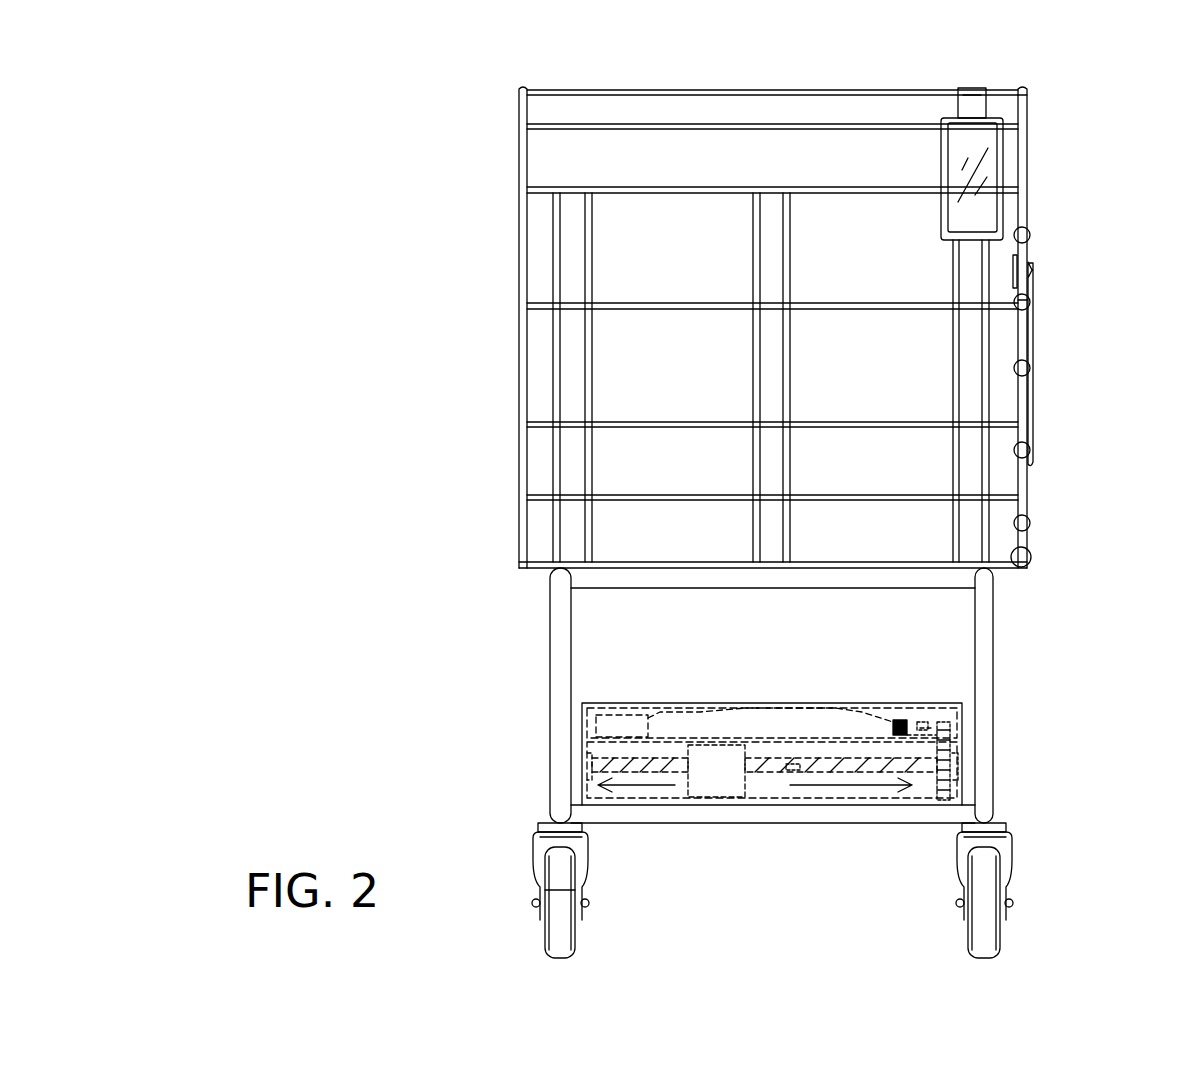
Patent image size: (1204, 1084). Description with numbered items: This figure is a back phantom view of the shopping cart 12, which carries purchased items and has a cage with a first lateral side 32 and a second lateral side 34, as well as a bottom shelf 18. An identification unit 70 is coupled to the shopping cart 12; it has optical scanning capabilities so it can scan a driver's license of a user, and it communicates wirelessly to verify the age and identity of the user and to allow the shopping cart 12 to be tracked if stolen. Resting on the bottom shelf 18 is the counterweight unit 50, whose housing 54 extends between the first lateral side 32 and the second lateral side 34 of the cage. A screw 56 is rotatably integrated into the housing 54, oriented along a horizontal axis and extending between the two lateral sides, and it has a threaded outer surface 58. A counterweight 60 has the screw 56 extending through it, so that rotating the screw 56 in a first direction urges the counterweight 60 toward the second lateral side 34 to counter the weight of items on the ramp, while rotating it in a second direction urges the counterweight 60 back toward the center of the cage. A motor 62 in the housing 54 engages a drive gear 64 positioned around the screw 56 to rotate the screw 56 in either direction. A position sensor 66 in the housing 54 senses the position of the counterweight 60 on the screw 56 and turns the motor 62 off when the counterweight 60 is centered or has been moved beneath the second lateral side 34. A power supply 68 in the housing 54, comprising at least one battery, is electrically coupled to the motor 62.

The shopping cart 12 is at (1080, 121).
The bottom shelf 18 is at (617, 805).
The first lateral side 32 is at (1025, 185).
The second lateral side 34 is at (520, 270).
The counterweight unit 50 is at (630, 697).
The housing 54 is at (945, 703).
The screw 56 is at (852, 770).
The outer surface 58 is at (790, 768).
The counterweight 60 is at (725, 770).
The motor 62 is at (923, 723).
The drive gear 64 is at (947, 787).
The position sensor 66 is at (777, 708).
The power supply 68 is at (605, 715).
The identification unit 70 is at (941, 175).